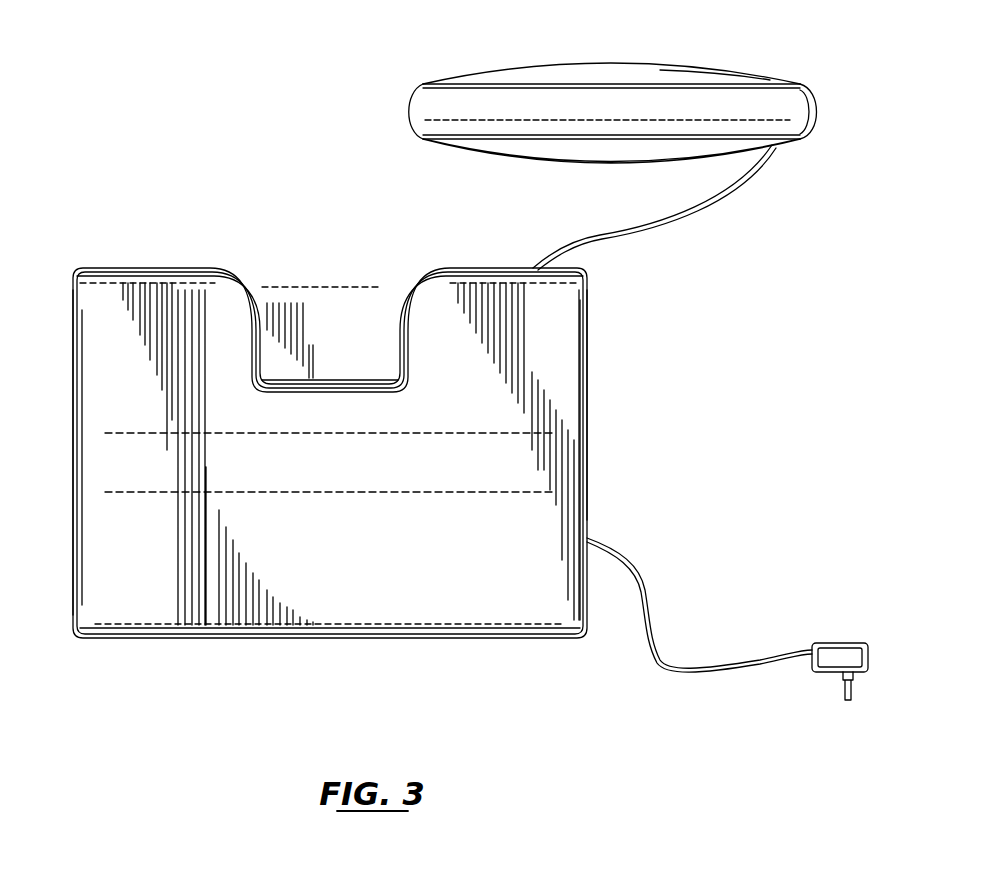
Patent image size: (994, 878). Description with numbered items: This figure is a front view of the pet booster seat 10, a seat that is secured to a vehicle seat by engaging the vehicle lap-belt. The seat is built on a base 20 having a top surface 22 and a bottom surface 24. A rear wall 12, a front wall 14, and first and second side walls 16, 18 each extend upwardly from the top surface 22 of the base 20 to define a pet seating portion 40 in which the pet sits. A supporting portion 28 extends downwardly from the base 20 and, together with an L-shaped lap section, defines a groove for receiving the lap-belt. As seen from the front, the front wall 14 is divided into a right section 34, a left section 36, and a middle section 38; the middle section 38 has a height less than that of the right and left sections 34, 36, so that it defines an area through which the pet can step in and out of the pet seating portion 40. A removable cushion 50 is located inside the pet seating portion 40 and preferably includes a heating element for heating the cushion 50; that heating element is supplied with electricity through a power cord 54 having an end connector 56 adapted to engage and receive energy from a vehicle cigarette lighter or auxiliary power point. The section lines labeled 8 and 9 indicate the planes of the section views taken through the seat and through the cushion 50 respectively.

The pet booster seat 10 is at (130, 133).
The rear wall 12 is at (268, 300).
The front wall 14 is at (118, 428).
The first side wall 16 is at (72, 371).
The second side wall 18 is at (590, 333).
The base 20 is at (545, 466).
The top surface 22 is at (555, 433).
The bottom surface 24 is at (545, 493).
The supporting portion 28 is at (72, 615).
The right section 34 is at (493, 292).
The left section 36 is at (145, 292).
The middle section 38 is at (325, 405).
The pet seating portion 40 is at (632, 352).
The removable cushion 50 is at (597, 62).
The power cord 54 is at (686, 215).
The end connector 56 is at (840, 643).
The section line 8 is at (377, 260).
The section line 9 is at (612, 62).